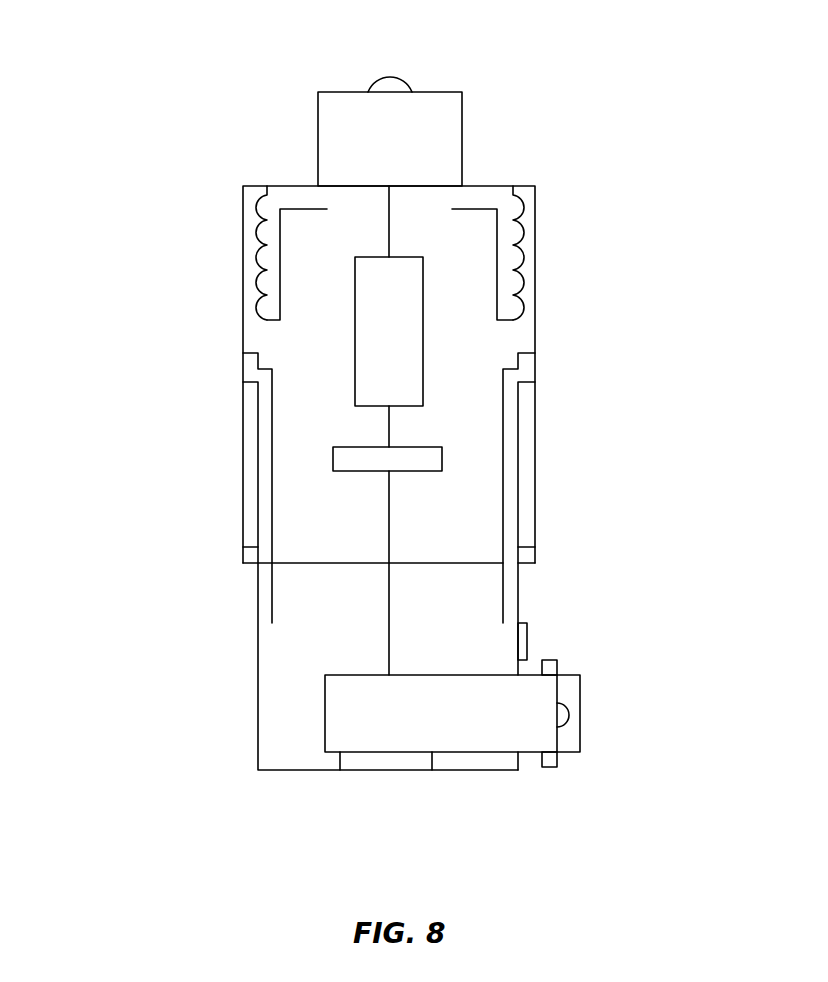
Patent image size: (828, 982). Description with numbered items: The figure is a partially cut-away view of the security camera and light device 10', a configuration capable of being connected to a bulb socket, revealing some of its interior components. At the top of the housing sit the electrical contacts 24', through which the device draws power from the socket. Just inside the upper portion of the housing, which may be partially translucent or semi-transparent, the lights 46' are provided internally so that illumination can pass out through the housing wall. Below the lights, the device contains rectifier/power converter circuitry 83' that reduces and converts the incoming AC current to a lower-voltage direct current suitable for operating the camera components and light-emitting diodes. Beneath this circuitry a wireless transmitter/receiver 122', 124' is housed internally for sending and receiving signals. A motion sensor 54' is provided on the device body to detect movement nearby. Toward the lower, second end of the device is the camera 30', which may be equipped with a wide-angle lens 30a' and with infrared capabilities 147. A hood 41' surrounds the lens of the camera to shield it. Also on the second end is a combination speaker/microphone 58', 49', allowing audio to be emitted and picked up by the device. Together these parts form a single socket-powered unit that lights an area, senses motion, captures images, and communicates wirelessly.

The security device 10' is at (291, 478).
The electrical contacts 24' is at (390, 99).
The lights 46' is at (379, 253).
The rectifier/power converter circuitry 83' is at (487, 331).
The wireless transmitter/receiver 122' is at (514, 444).
The wireless transmitter/receiver 124' is at (514, 444).
The motion sensor 54' is at (566, 621).
The infrared capabilities 147 is at (555, 660).
The hood 41' is at (612, 704).
The wide-angle lens 30a' is at (619, 716).
The camera 30' is at (492, 723).
The speaker/microphone 58' is at (429, 804).
The speaker/microphone 49' is at (429, 804).